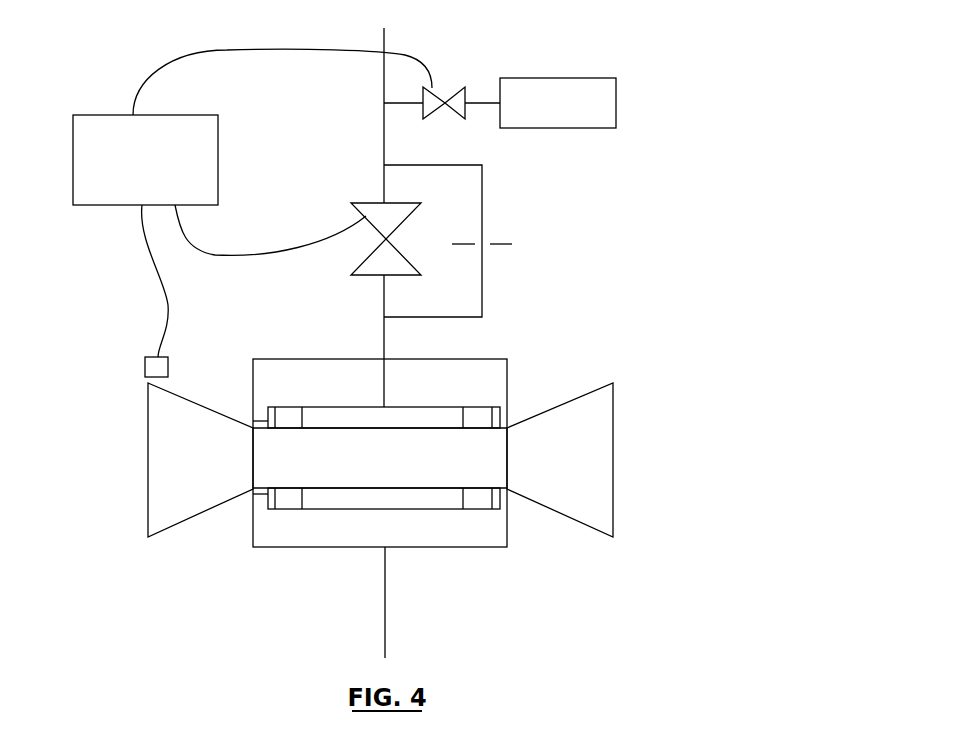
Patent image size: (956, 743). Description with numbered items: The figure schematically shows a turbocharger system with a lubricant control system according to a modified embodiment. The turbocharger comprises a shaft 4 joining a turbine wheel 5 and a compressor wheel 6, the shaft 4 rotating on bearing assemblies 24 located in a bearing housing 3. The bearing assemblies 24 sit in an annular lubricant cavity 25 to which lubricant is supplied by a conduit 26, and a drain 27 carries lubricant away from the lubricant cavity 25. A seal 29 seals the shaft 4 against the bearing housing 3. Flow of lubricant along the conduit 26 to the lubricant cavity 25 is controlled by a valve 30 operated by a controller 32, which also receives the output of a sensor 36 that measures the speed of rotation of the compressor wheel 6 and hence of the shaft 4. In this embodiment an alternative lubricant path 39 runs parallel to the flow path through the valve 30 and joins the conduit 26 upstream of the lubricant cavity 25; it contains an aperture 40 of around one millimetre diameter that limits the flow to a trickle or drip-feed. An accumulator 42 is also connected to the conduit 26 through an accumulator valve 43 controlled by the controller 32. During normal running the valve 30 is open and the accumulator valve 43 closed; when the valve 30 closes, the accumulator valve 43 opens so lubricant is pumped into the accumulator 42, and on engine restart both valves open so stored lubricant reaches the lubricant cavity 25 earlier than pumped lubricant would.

The bearing housing 3 is at (473, 379).
The shaft 4 is at (347, 450).
The turbine wheel 5 is at (575, 448).
The compressor wheel 6 is at (170, 459).
The bearing assemblies 24 is at (288, 418).
The lubricant cavity 25 is at (412, 500).
The conduit 26 is at (384, 131).
The drain 27 is at (385, 623).
The seal 29 is at (258, 421).
The valve 30 is at (372, 213).
The controller 32 is at (145, 160).
The sensor 36 is at (145, 365).
The alternative lubricant path 39 is at (482, 185).
The aperture 40 is at (488, 235).
The accumulator 42 is at (558, 103).
The accumulator valve 43 is at (457, 100).